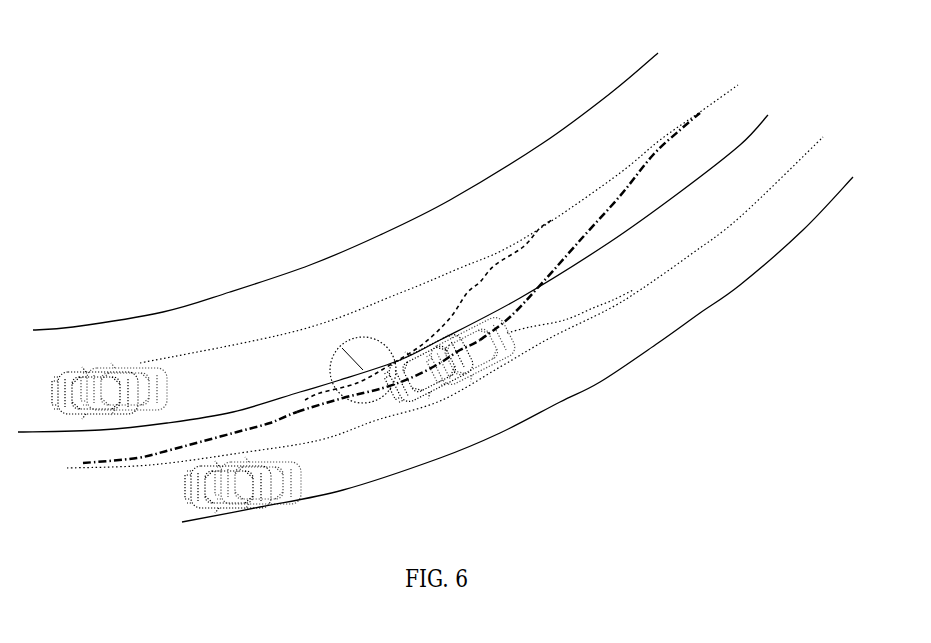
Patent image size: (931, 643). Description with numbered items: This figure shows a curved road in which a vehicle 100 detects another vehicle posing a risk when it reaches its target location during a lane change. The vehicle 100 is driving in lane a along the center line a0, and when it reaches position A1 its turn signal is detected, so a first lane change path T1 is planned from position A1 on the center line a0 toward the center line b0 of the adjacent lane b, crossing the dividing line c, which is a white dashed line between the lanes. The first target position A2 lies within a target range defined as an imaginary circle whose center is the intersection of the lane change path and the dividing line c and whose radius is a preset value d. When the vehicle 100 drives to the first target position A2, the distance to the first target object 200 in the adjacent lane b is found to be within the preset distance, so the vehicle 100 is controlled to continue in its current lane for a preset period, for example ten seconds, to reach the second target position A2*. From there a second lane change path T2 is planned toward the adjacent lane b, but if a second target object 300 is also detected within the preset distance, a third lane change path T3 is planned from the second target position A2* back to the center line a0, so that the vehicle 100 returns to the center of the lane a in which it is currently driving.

The vehicle 100 is at (420, 362).
The first target object 200 is at (93, 370).
The second target object 300 is at (278, 485).
The position A1 is at (170, 446).
The first target position A2 is at (388, 378).
The first candidate trajectory T1 is at (467, 292).
The second lane change path T2 is at (583, 233).
The third lane change path T3 is at (627, 300).
The lane a is at (693, 284).
The center line of lane a a0 is at (732, 223).
The adjacent lane b is at (638, 110).
The center line of adjacent lane b b0 is at (700, 110).
The dividing line c is at (743, 143).
The preset value d is at (363, 370).